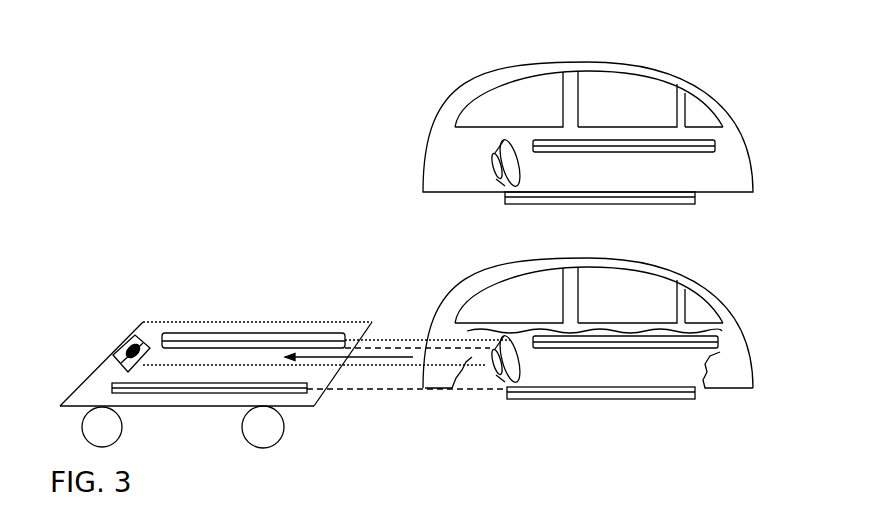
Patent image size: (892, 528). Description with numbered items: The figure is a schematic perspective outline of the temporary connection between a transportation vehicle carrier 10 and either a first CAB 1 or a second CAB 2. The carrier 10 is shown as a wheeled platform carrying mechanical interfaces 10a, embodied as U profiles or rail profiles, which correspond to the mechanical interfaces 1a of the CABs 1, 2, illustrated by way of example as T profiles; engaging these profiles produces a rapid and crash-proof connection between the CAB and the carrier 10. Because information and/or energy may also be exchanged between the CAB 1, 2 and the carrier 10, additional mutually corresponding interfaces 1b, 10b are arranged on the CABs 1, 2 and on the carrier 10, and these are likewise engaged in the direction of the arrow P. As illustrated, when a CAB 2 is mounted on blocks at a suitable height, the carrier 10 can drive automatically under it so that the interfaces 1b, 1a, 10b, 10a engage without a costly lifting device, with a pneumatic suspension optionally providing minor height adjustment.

The first CAB 1 is at (663, 63).
The mechanical interfaces of the CABs 1a is at (687, 197).
The additional interfaces of the CABs 1b is at (500, 150).
The second CAB 2 is at (712, 283).
The transportation vehicle carrier 10 is at (97, 352).
The mechanical interfaces of the transportation vehicle carrier 10a is at (243, 390).
The additional interfaces of the transportation vehicle carrier 10b is at (130, 358).
The arrow P is at (388, 357).